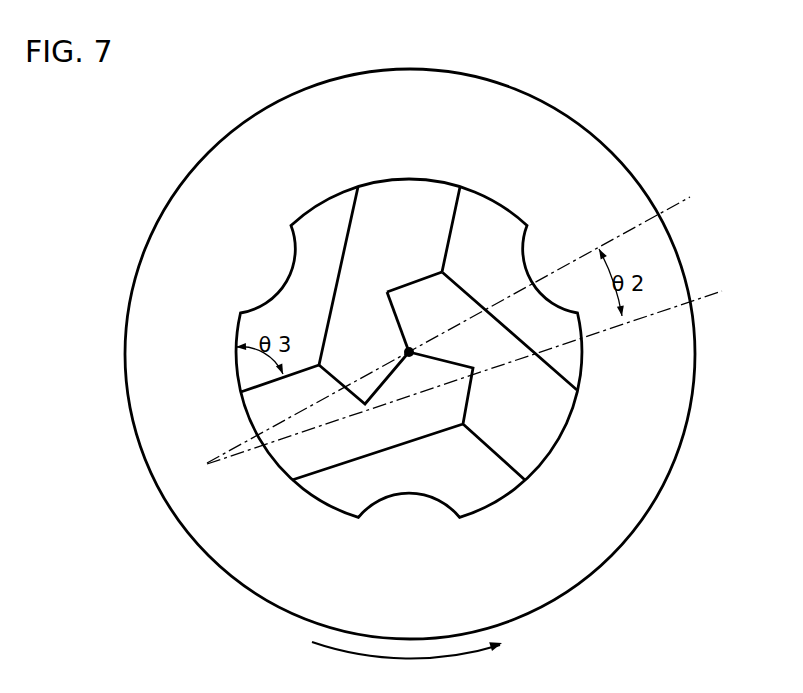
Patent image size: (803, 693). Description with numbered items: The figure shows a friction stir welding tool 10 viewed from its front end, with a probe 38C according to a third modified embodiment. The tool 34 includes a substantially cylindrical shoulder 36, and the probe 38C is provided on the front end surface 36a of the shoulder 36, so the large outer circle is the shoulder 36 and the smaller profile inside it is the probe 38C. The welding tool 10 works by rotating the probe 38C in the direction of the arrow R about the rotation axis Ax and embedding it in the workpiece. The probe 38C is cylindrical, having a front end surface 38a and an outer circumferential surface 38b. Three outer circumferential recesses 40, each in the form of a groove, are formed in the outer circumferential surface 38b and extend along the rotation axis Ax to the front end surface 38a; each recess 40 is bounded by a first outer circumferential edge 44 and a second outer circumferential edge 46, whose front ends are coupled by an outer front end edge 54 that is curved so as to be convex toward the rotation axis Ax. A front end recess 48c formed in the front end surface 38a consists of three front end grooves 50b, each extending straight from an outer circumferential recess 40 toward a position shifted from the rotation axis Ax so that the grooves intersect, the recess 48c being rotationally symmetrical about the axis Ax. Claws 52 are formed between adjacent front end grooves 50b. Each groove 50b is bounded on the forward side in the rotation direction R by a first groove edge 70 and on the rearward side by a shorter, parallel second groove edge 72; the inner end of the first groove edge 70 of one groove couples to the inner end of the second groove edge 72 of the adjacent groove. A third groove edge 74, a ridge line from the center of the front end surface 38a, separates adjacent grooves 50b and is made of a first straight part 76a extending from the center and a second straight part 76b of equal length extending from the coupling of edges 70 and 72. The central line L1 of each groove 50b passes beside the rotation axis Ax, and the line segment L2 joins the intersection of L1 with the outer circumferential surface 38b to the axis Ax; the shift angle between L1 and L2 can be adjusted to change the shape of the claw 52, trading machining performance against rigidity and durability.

The welding tool 10 is at (371, 353).
The tool 34 is at (326, 337).
The shoulder 36 is at (608, 149).
The front end surface of shoulder 36a is at (570, 151).
The front end surface of probe 38a is at (470, 495).
The outer circumferential surface of probe 38b is at (508, 500).
The probe 38C is at (503, 198).
The outer circumferential recess 40 is at (258, 291).
The first outer circumferential edge 44 is at (237, 313).
The second outer circumferential edge 46 is at (290, 226).
The front end recess 48c is at (292, 447).
The front end groove 50b is at (432, 240).
The claw 52 is at (343, 503).
The outer front end edge 54 is at (290, 268).
The first groove edge 70 is at (290, 475).
The second groove edge 72 is at (257, 389).
The third groove edge 74 is at (377, 228).
The first straight part 76a is at (390, 302).
The second straight part 76b is at (410, 283).
The rotation axis Ax is at (402, 352).
The central line of front end groove L1 is at (478, 371).
The line segment L2 is at (461, 322).
The rotation direction R is at (417, 645).